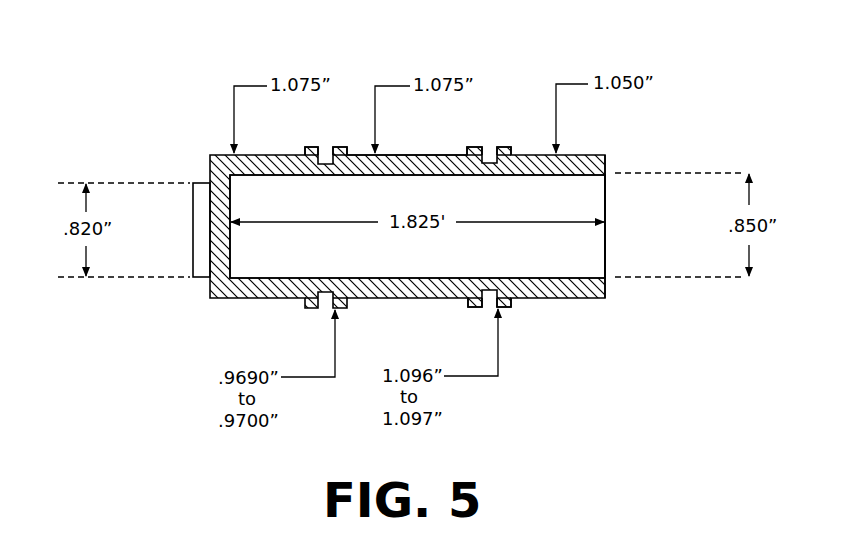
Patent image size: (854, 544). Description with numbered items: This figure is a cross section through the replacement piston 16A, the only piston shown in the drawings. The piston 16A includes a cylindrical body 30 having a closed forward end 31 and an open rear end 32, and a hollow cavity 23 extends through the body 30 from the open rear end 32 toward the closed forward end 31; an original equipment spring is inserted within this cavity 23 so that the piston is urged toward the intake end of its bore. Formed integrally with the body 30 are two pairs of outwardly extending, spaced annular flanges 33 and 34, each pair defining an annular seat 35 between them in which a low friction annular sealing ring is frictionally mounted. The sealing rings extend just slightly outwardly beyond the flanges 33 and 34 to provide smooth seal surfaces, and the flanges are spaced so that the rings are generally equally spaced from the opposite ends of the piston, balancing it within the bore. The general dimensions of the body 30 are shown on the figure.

The replacement piston 16A is at (199, 303).
The cylindrical body 30 is at (440, 153).
The hollow cavity 23 is at (554, 206).
The closed forward end 31 is at (193, 221).
The open rear end 32 is at (606, 210).
The annular flange 33 is at (306, 150).
The annular flange 34 is at (336, 150).
The annular seat 35 is at (490, 150).